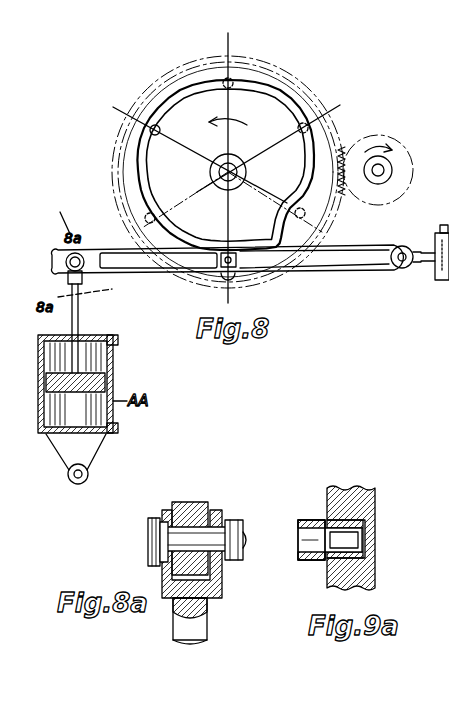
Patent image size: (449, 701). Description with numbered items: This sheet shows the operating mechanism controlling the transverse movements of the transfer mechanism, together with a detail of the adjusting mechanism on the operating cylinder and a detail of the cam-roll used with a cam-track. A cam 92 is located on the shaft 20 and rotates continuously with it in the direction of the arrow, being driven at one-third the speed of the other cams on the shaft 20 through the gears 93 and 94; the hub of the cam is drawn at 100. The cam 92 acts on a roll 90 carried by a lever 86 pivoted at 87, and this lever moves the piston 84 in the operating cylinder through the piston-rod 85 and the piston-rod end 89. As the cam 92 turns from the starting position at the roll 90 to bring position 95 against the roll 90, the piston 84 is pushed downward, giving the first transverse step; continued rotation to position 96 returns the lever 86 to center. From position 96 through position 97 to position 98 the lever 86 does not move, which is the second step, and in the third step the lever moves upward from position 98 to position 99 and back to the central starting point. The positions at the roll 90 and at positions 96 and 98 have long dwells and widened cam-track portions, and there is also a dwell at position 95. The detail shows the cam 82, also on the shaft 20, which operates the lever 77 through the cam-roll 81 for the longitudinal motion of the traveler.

In FIG. 8, the cam 92 is at (275, 88).
In FIG. 8, the gear 93 is at (311, 94).
In FIG. 8, the gear 94 is at (390, 134).
In FIG. 8, the shaft 20 is at (380, 171).
In FIG. 8, the cam shaft hub 100 is at (247, 172).
In FIG. 8, the cam position 95 is at (155, 218).
In FIG. 8, the cam position 96 is at (150, 131).
In FIG. 8, the cam position 97 is at (224, 79).
In FIG. 8, the cam position 98 is at (308, 127).
In FIG. 8, the cam position 99 is at (306, 212).
In FIG. 8, the lever 86 is at (140, 264).
In FIG. 8A, the lever 86 is at (190, 503).
In FIG. 8, the pivot 87 is at (401, 262).
In FIG. 8, the roll 90 is at (246, 272).
In FIG. 8, the piston-rod end 89 is at (68, 272).
In FIG. 8A, the piston-rod end 89 is at (222, 578).
In FIG. 8, the piston-rod 85 is at (80, 308).
In FIG. 8A, the piston-rod 85 is at (200, 634).
In FIG. 8, the piston 84 is at (93, 383).
In FIG. 9A, the cam 82 is at (376, 500).
In FIG. 9A, the cam-roll 81 is at (352, 556).
In FIG. 9A, the lever 77 is at (311, 560).